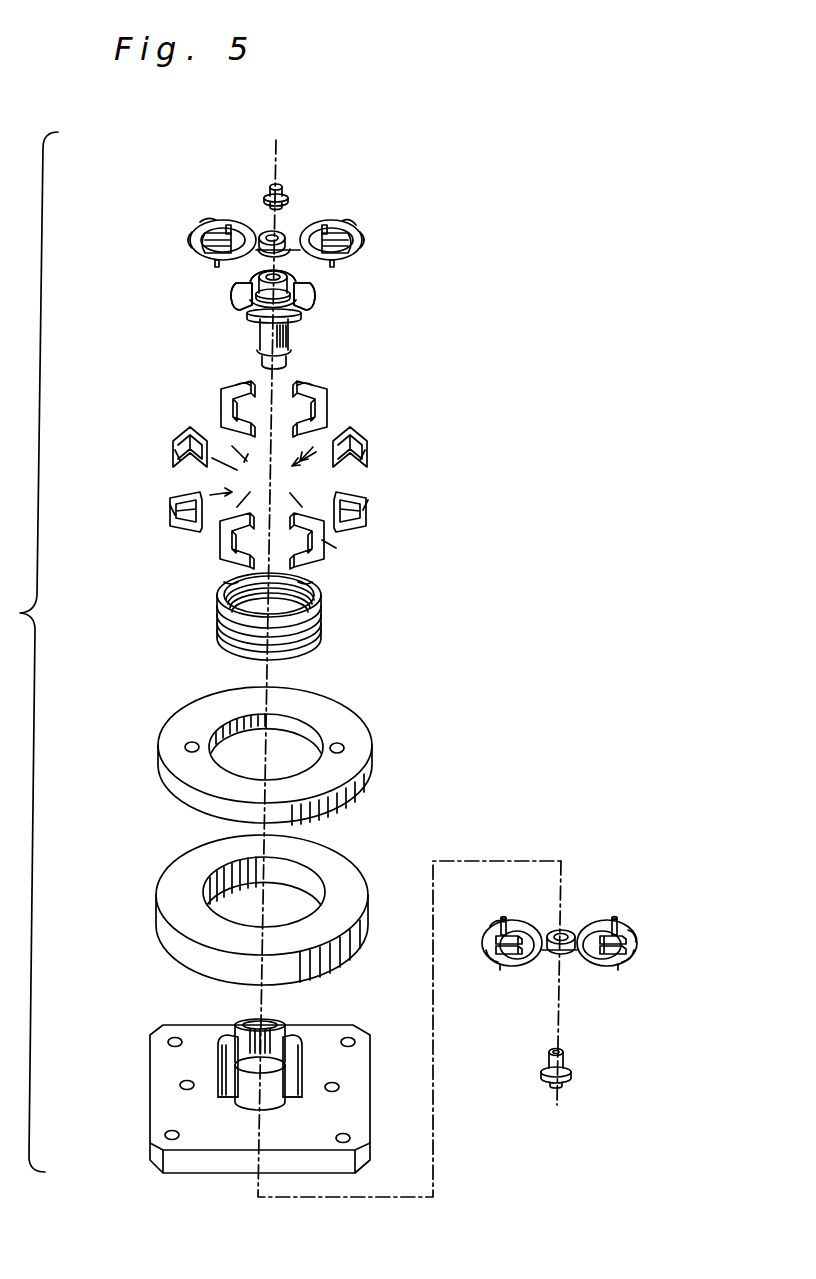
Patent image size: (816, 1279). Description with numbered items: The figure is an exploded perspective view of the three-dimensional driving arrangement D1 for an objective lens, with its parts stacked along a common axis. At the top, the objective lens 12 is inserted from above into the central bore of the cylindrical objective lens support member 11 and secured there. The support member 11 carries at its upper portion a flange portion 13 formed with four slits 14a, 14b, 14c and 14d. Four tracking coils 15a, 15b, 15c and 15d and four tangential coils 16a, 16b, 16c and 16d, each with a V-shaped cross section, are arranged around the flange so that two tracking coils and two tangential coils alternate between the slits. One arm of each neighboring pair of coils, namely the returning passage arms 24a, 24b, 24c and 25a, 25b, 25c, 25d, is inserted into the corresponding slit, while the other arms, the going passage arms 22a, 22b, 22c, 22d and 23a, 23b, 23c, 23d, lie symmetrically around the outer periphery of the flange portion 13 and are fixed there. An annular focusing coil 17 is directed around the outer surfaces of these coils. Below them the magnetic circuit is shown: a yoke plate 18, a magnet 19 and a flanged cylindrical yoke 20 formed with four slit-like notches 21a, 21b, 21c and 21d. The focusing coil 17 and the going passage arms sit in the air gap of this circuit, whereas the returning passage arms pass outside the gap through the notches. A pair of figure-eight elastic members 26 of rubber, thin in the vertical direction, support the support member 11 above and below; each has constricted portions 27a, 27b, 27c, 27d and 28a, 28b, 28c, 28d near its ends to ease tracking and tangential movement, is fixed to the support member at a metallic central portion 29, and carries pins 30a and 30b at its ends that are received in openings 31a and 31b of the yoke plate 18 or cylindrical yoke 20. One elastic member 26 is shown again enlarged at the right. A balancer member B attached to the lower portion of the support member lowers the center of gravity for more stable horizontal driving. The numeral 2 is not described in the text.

The three-dimensional driving arrangement D1 is at (575, 229).
The connecting bracket 2 is at (206, 224).
The objective lens support member 11 is at (292, 288).
The objective lens 12 is at (283, 182).
The flange portion 13 is at (310, 298).
The slit 14a is at (242, 283).
The slit 14b is at (245, 305).
The slit 14c is at (303, 308).
The slit 14d is at (305, 278).
The tracking coil 15a is at (178, 440).
The tracking coil 15b is at (172, 524).
The tracking coil 15c is at (368, 520).
The tracking coil 15d is at (368, 440).
The tangential coil 16a is at (324, 396).
The tangential coil 16b is at (226, 396).
The tangential coil 16c is at (222, 548).
The tangential coil 16d is at (325, 552).
The focusing coil 17 is at (321, 636).
The yoke plate 18 is at (350, 710).
The magnet 19 is at (345, 872).
The flanged cylindrical yoke 20 is at (170, 1057).
The slit-like notch 21a is at (232, 1030).
The slit-like notch 21b is at (225, 1097).
The slit-like notch 21c is at (290, 1097).
The slit-like notch 21d is at (288, 1030).
The going passage arm 22a is at (175, 455).
The going passage arm 22b is at (170, 510).
The going passage arm 22c is at (370, 506).
The going passage arm 22d is at (370, 456).
The going passage arm 23a is at (296, 382).
The going passage arm 23b is at (248, 382).
The going passage arm 23c is at (222, 583).
The going passage arm 23d is at (318, 583).
The returning passage arm 24a is at (240, 436).
The returning passage arm 24b is at (180, 493).
The returning passage arm 24c is at (258, 485).
The returning passage arm 25a is at (302, 436).
The returning passage arm 25b is at (240, 460).
The returning passage arm 25c is at (236, 528).
The returning passage arm 25d is at (322, 545).
The elastic member 26 is at (320, 236).
The constricted portion 27a is at (497, 930).
The constricted portion 27b is at (196, 244).
The constricted portion 27c is at (361, 246).
The constricted portion 27d is at (349, 234).
The constricted portion 28a is at (338, 226).
The constricted portion 28b is at (229, 226).
The constricted portion 28c is at (214, 259).
The constricted portion 28d is at (345, 258).
The central portion 29 is at (282, 232).
The pin 30a is at (206, 238).
The pin 30b is at (352, 240).
The opening 31a is at (185, 747).
The opening 31b is at (344, 748).
The balancer member B is at (566, 1082).